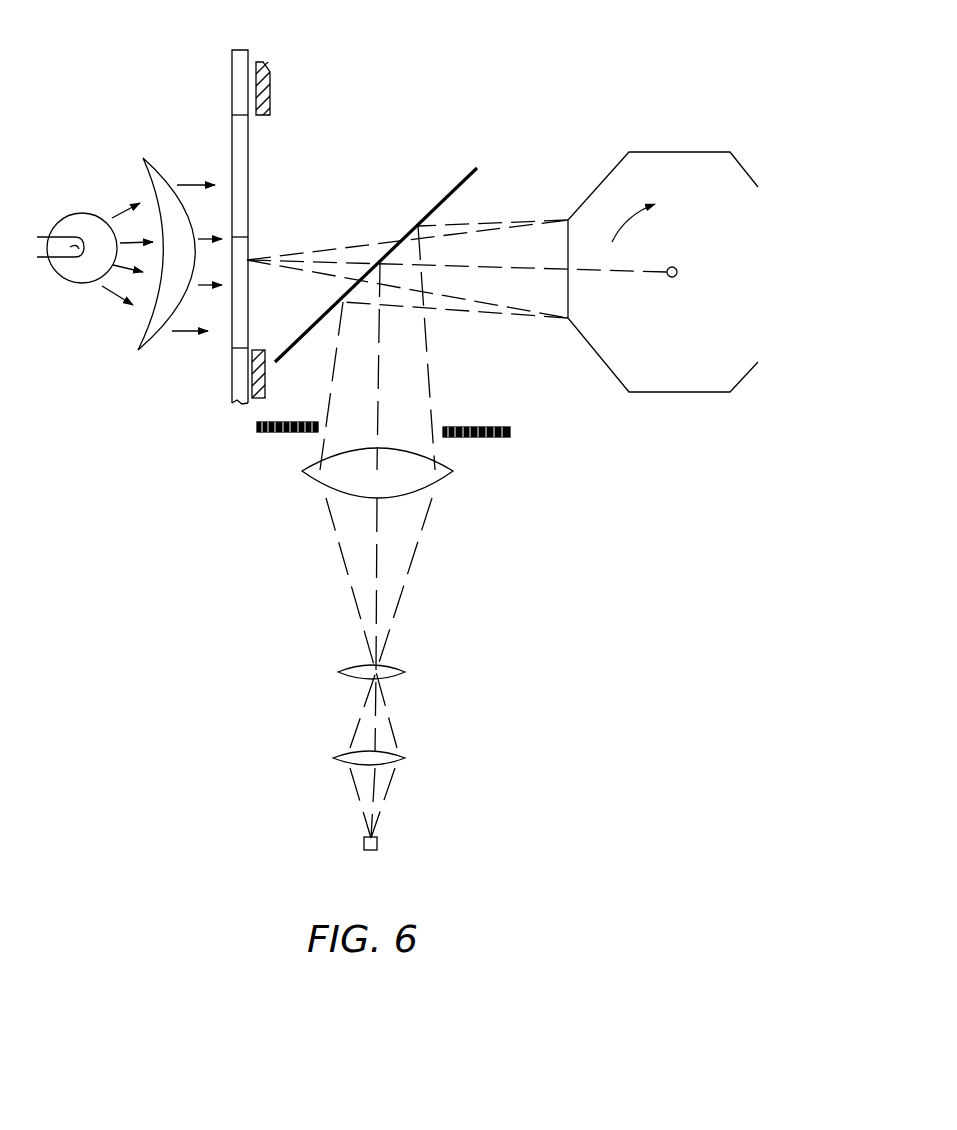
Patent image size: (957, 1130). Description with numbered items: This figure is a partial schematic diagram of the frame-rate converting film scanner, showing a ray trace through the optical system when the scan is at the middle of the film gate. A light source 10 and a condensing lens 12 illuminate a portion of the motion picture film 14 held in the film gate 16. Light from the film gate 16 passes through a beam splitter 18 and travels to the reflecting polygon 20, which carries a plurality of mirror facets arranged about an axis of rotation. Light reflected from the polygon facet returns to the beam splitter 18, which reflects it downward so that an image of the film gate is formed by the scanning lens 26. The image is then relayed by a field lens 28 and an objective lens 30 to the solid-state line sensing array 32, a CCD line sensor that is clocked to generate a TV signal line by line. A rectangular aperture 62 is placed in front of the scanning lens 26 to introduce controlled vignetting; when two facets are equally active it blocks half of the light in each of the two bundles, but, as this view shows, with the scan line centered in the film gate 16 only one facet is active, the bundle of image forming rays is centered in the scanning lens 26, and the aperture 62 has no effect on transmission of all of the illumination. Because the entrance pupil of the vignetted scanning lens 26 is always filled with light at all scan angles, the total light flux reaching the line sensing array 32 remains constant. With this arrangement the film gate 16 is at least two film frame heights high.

The light source 10 is at (67, 214).
The condensing lens 12 is at (163, 168).
The motion picture film 14 is at (240, 72).
The film gate 16 is at (267, 110).
The beam splitter 18 is at (456, 183).
The reflecting polygon 20 is at (731, 263).
The scanning lens 26 is at (440, 477).
The field lens 28 is at (400, 672).
The objective lens 30 is at (400, 752).
The line sensing array 32 is at (378, 840).
The aperture 62 is at (272, 432).